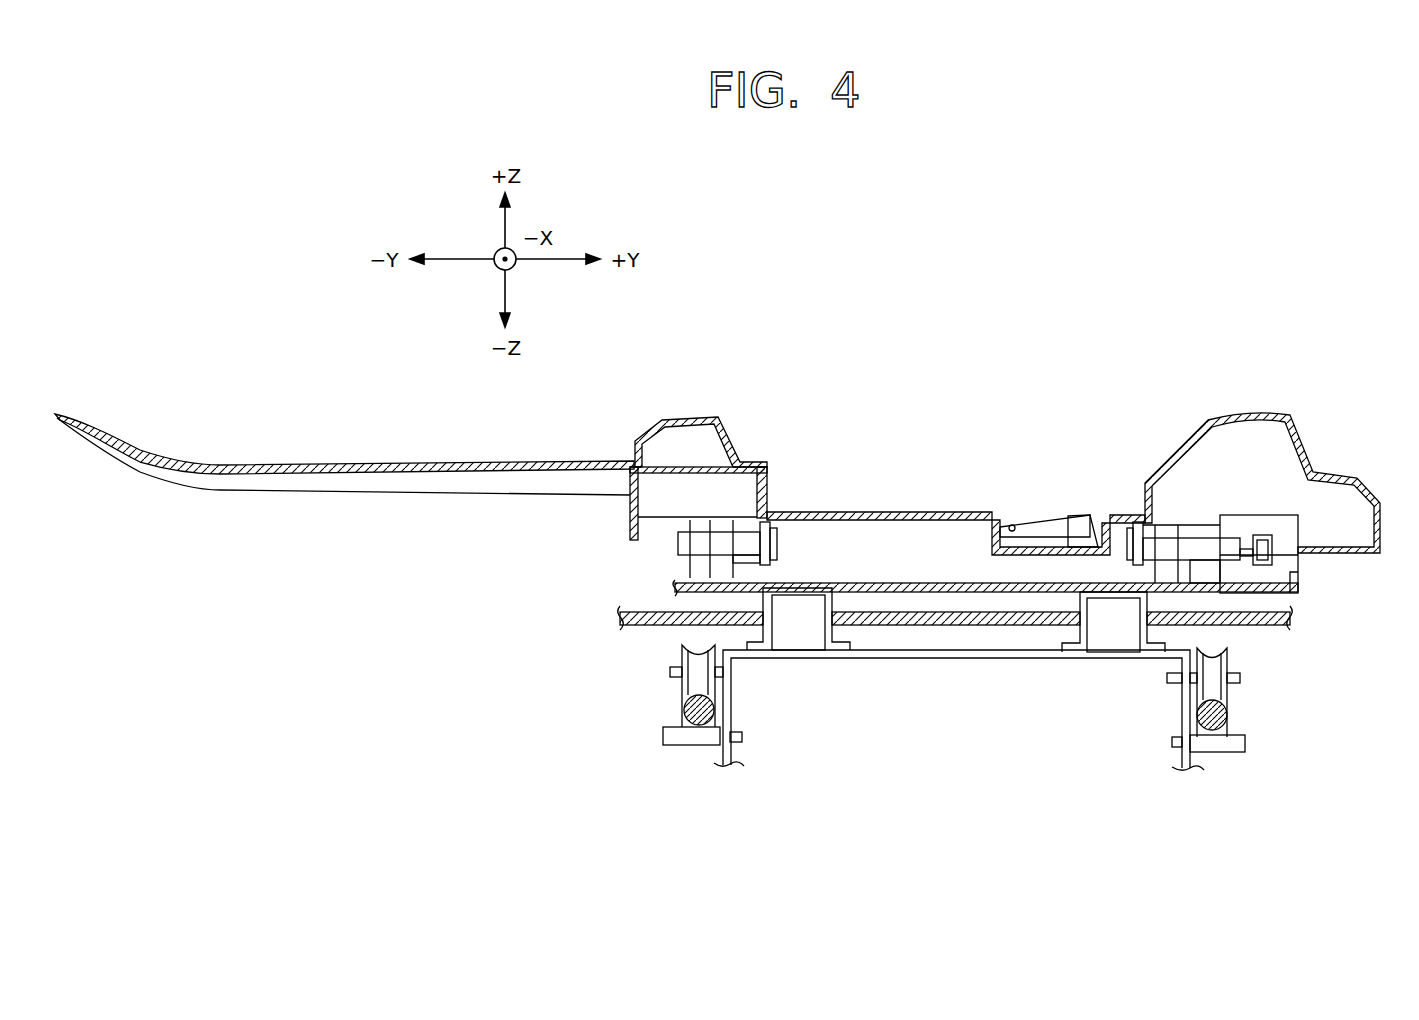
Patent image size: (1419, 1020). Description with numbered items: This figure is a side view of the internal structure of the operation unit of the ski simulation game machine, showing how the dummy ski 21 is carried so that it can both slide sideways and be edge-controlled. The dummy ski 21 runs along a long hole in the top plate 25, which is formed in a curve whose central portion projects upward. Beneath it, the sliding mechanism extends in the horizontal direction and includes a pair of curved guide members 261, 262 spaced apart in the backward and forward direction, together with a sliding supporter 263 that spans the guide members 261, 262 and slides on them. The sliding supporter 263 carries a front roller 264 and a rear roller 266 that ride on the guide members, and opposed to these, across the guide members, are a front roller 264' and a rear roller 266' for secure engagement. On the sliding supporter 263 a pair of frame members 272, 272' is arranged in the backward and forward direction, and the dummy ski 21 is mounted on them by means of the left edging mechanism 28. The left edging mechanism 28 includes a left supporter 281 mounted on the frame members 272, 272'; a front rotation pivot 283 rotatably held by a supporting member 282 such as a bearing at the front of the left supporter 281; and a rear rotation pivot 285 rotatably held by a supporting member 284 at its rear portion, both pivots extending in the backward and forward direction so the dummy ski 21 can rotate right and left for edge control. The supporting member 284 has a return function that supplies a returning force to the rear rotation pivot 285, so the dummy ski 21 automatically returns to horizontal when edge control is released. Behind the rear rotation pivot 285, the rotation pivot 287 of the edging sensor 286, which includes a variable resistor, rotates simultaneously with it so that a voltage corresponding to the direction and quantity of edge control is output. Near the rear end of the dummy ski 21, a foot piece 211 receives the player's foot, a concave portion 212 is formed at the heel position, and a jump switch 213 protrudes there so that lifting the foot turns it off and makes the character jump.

The dummy ski 21 is at (325, 470).
The foot piece 211 is at (767, 472).
The concave portion 212 is at (1070, 537).
The jump switch 213 is at (1047, 523).
The top plate 25 is at (1253, 632).
The left edging mechanism 28 is at (1169, 519).
The left supporter 281 is at (923, 583).
The supporting member 282 is at (748, 561).
The front rotation pivot 283 is at (723, 543).
The supporting member 284 is at (1197, 572).
The rear rotation pivot 285 is at (1195, 537).
The edging sensor 286 is at (1262, 542).
The rotation pivot of the edging sensor 287 is at (1298, 572).
The guide member 261 is at (683, 712).
The guide member 262 is at (1227, 715).
The sliding supporter 263 is at (942, 660).
The front roller 264 is at (662, 692).
The front roller for secure engagement 264' is at (684, 780).
The rear roller 266 is at (1168, 697).
The rear roller for secure engagement 266' is at (1216, 789).
The frame member 272 is at (798, 656).
The frame member 272' is at (1101, 672).